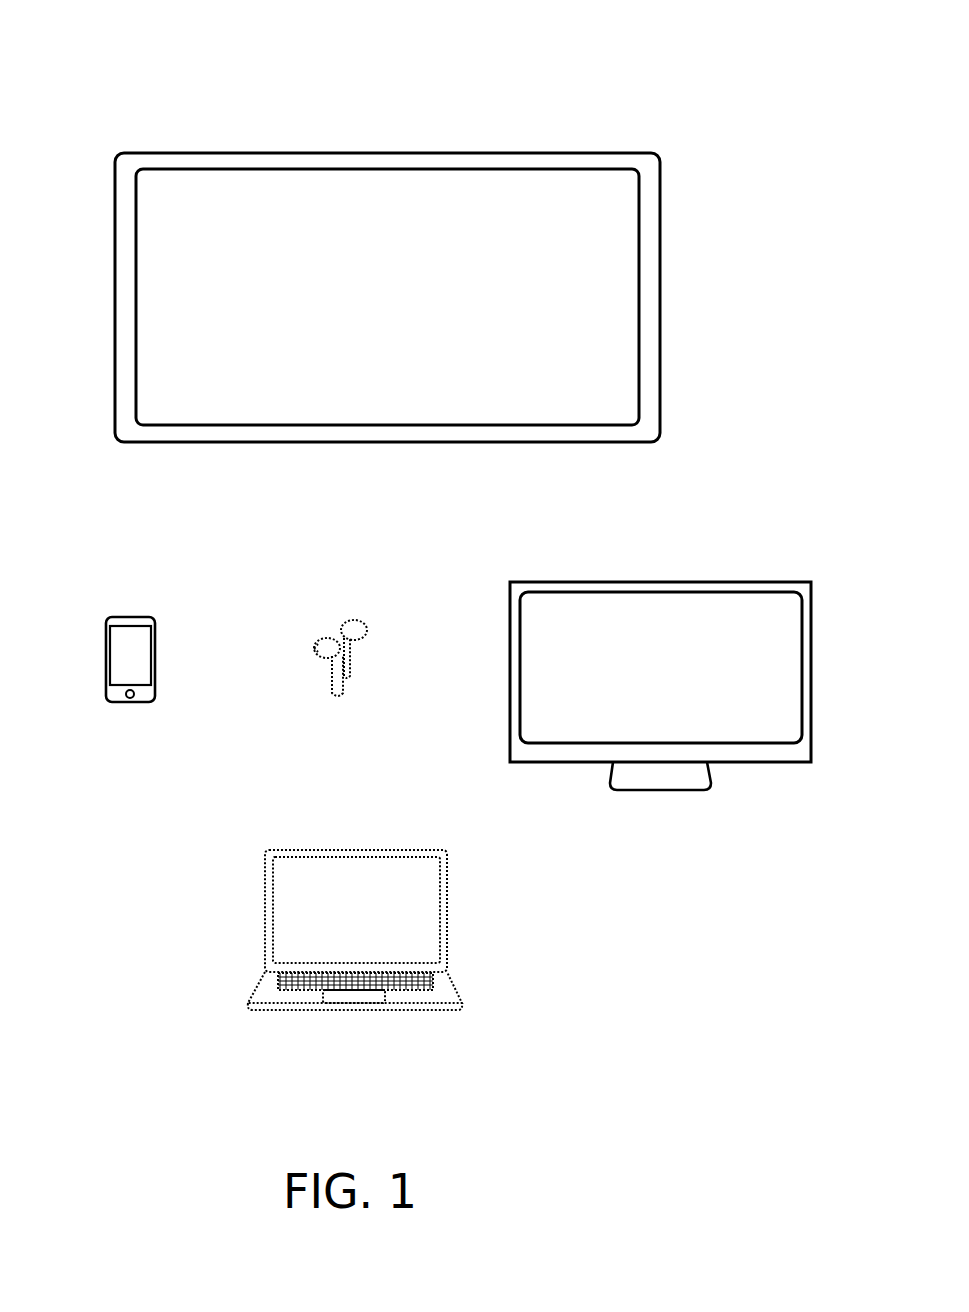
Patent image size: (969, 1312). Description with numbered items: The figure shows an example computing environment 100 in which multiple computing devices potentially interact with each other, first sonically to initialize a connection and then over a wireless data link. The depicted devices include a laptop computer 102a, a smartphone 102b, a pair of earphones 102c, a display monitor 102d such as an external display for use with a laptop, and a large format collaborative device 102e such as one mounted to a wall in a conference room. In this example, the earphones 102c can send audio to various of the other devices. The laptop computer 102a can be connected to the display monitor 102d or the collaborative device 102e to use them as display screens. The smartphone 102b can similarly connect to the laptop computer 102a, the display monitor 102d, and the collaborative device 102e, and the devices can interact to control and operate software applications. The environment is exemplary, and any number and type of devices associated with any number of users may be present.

The computing environment 100 is at (112, 48).
The laptop computer 102a is at (270, 1013).
The smartphone 102b is at (121, 615).
The earphones 102c is at (323, 633).
The display monitor 102d is at (529, 579).
The large format collaborative device 102e is at (562, 147).